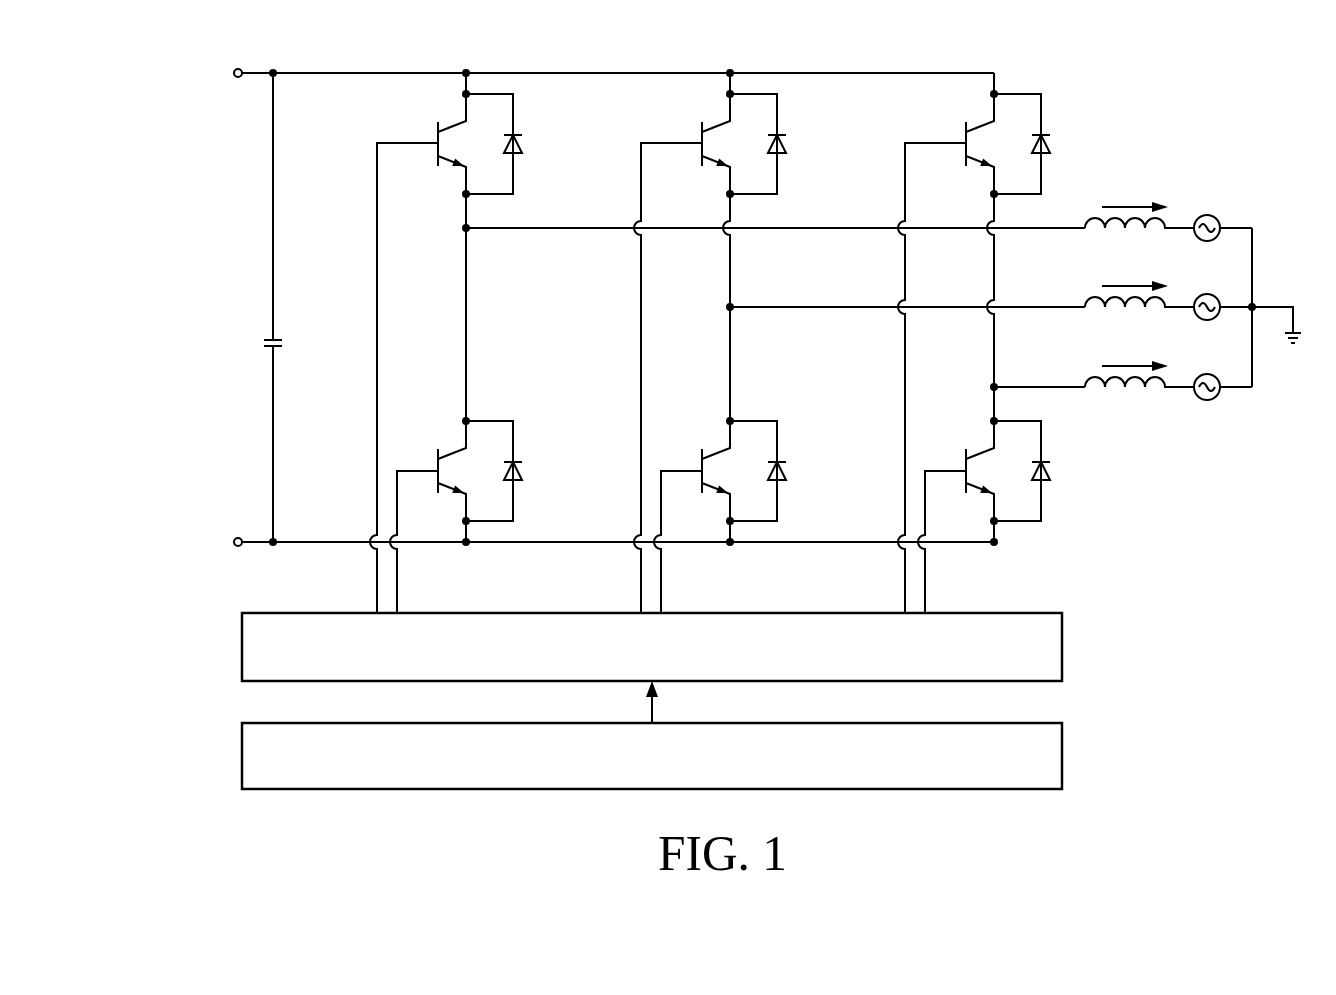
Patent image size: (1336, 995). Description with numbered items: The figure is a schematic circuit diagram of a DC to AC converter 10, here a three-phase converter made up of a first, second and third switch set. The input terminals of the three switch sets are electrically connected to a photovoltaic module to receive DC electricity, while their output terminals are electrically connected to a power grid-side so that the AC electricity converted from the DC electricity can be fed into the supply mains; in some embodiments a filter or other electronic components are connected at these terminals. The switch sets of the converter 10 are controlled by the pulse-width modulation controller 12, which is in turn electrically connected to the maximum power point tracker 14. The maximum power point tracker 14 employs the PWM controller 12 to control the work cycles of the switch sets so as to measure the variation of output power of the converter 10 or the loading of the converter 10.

The converter 10 is at (142, 76).
The pulse-width modulation controller 12 is at (1062, 647).
The maximum power point tracker 14 is at (1062, 755).